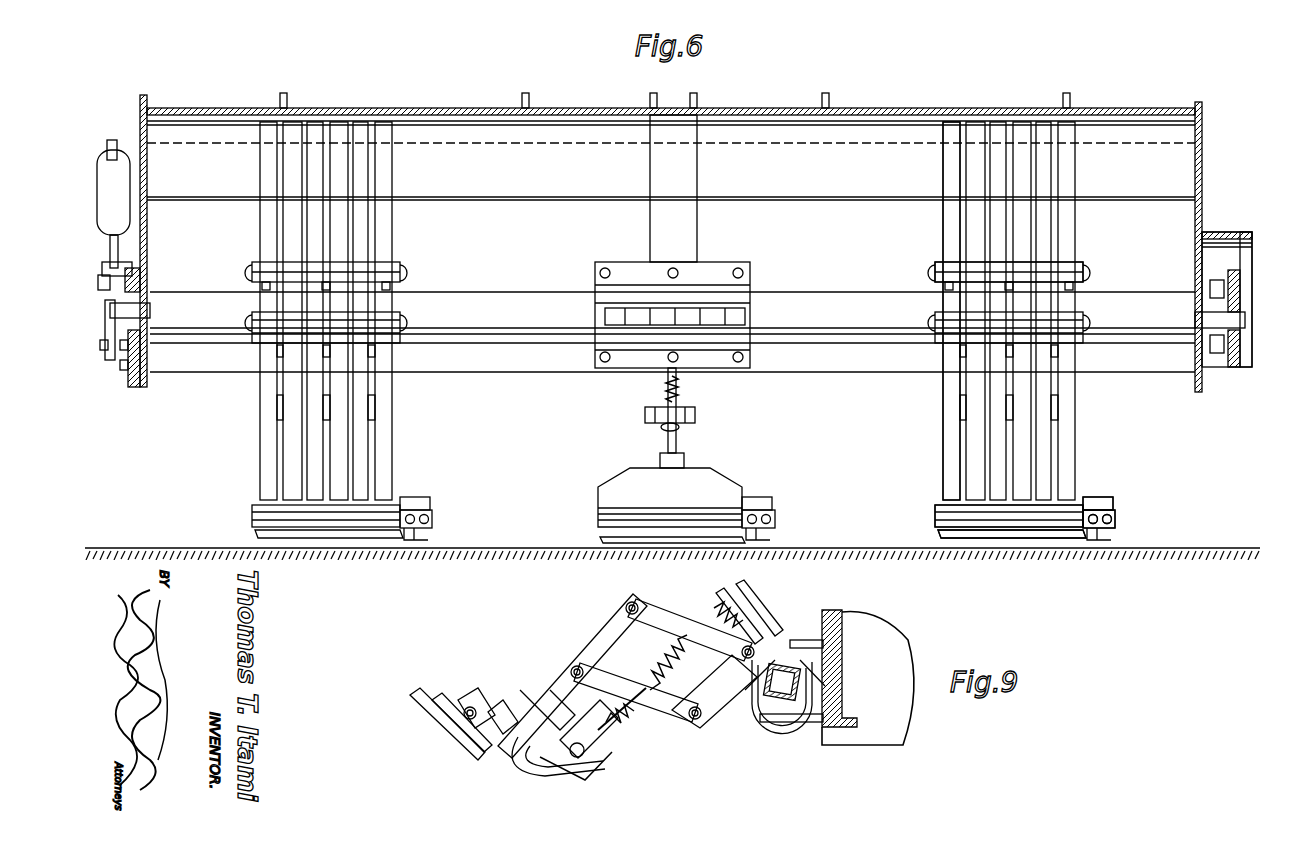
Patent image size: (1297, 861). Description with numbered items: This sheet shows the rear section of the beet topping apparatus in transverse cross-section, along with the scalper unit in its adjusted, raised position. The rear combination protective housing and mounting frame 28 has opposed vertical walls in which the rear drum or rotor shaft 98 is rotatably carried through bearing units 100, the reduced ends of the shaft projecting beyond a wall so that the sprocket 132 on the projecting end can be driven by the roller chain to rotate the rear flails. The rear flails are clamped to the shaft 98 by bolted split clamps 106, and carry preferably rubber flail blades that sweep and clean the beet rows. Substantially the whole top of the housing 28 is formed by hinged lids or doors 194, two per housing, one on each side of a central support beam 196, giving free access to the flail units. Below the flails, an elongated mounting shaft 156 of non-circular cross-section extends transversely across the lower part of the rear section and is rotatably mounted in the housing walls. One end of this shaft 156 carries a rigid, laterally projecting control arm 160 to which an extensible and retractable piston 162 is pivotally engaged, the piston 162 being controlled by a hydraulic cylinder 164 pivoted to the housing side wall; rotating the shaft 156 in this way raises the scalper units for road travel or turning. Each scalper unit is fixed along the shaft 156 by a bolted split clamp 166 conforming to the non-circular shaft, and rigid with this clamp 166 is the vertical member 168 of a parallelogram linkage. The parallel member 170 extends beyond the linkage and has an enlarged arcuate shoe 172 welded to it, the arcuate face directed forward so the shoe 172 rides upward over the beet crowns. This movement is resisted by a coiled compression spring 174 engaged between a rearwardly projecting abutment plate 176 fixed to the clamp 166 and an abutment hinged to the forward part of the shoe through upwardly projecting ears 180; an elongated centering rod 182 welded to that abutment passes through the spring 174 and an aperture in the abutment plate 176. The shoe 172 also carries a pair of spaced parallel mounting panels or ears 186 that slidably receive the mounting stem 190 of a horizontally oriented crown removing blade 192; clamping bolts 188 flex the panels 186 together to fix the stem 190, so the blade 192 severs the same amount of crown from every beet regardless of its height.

In FIG. 9, the combination protective housing and mounting frame 28 is at (880, 645).
In FIG. 6, the rear drum or rotor shaft 98 is at (805, 300).
In FIG. 6, the bearing unit 100 is at (1215, 362).
In FIG. 6, the bolted split clamp 106 is at (1078, 292).
In FIG. 6, the sprocket 132 is at (1240, 290).
In FIG. 9, the mounting shaft 156 is at (790, 656).
In FIG. 6, the control arm 160 is at (132, 290).
In FIG. 6, the piston 162 is at (115, 250).
In FIG. 6, the hydraulic cylinder 164 is at (118, 215).
In FIG. 9, the bolted split clamp 166 is at (795, 710).
In FIG. 6, the vertical member 168 is at (665, 395).
In FIG. 9, the vertical member 168 is at (718, 692).
In FIG. 9, the linkage member 170 is at (602, 650).
In FIG. 6, the arcuate shoe 172 is at (948, 514).
In FIG. 9, the arcuate shoe 172 is at (515, 770).
In FIG. 6, the coiled compression spring 174 is at (680, 398).
In FIG. 9, the coiled compression spring 174 is at (628, 712).
In FIG. 9, the abutment plate 176 is at (752, 626).
In FIG. 9, the ears 180 is at (567, 764).
In FIG. 9, the centering rod 182 is at (627, 720).
In FIG. 6, the mounting panels or ears 186 is at (1102, 524).
In FIG. 9, the mounting panels or ears 186 is at (483, 712).
In FIG. 6, the clamping bolts 188 is at (1113, 514).
In FIG. 6, the mounting stem 190 is at (1100, 503).
In FIG. 9, the mounting stem 190 is at (505, 712).
In FIG. 6, the crown removing blade 192 is at (1015, 538).
In FIG. 9, the crown removing blade 192 is at (440, 727).
In FIG. 6, the hinged lid or door 194 is at (862, 110).
In FIG. 6, the central support beam 196 is at (657, 103).